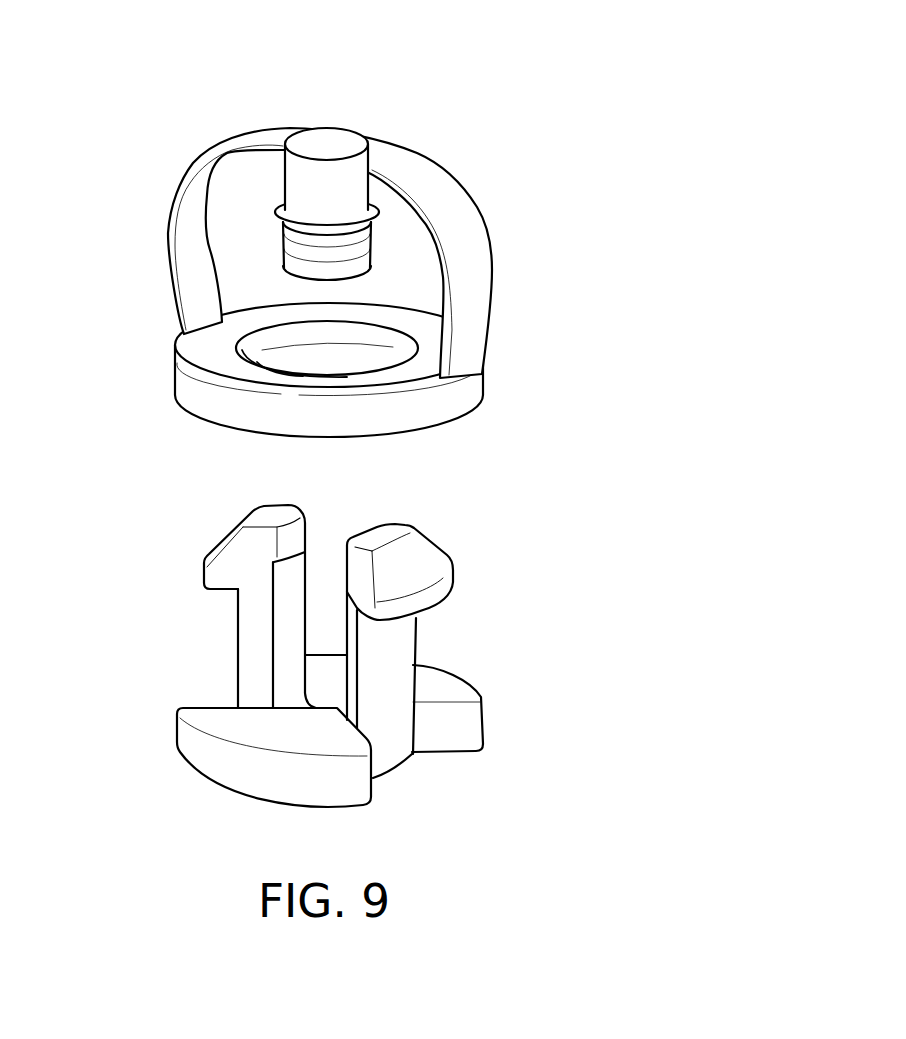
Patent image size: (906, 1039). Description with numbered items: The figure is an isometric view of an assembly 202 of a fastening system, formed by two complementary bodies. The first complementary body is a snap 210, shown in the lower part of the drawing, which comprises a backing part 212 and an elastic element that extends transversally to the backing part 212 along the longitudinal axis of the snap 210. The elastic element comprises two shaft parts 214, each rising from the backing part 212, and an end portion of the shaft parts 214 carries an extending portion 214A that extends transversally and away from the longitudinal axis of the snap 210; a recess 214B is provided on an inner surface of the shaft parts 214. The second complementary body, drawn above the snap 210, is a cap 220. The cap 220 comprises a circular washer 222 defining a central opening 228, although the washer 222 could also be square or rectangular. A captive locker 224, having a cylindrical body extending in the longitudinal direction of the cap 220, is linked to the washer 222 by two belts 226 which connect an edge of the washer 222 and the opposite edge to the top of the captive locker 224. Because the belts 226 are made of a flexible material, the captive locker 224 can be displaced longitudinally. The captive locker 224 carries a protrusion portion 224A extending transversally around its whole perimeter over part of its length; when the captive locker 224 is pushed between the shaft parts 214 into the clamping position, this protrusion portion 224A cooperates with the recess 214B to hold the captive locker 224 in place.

The assembly 202 is at (410, 468).
The snap 210 is at (328, 680).
The backing part 212 is at (240, 767).
The shaft parts 214 is at (328, 629).
The extending portion 214A is at (435, 578).
The recess 214B is at (232, 590).
The cap 220 is at (330, 283).
The circular washer 222 is at (338, 394).
The captive locker 224 is at (439, 180).
The protrusion portion 224A is at (368, 225).
The belts 226 is at (197, 200).
The central opening 228 is at (313, 366).